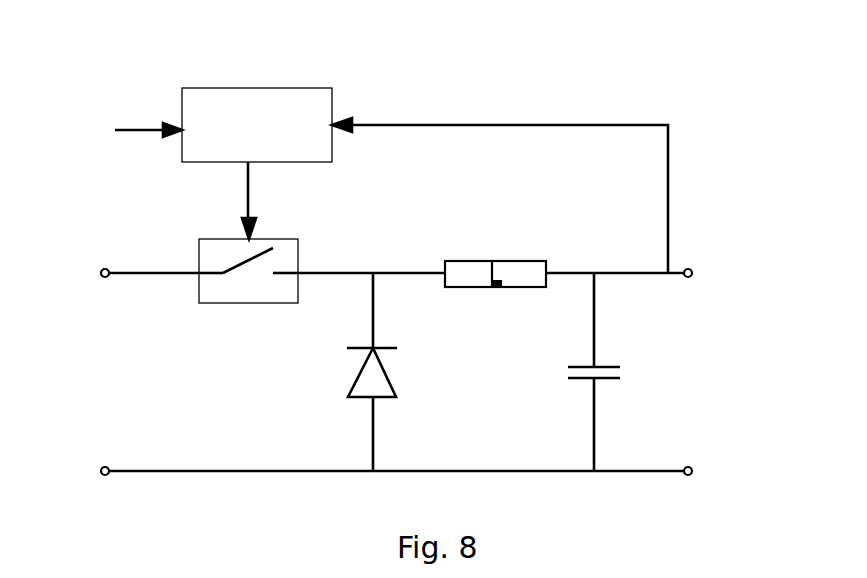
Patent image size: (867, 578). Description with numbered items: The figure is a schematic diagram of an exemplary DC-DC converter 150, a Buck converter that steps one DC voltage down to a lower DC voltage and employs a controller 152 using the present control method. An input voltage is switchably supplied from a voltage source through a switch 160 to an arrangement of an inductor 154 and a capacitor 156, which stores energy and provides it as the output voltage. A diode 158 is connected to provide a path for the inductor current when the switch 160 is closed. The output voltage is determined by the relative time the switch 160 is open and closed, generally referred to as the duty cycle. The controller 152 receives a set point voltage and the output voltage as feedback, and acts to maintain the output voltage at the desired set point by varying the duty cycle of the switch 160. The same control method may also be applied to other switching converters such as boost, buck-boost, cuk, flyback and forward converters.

The DC-DC converter 150 is at (677, 551).
The controller 152 is at (183, 158).
The inductor 154 is at (508, 261).
The capacitor 156 is at (558, 368).
The diode 158 is at (352, 378).
The switch 160 is at (298, 239).